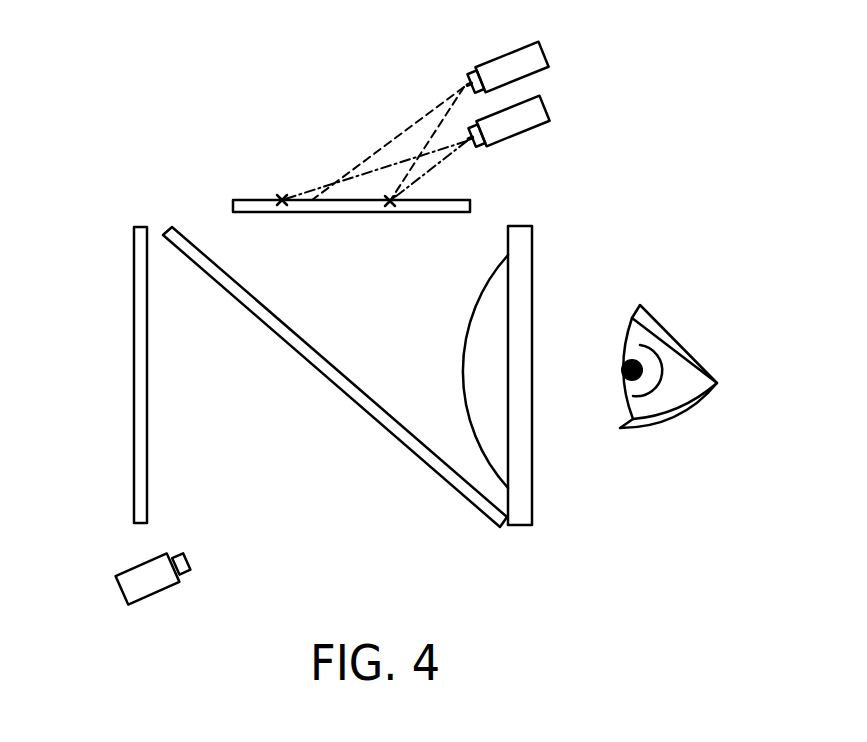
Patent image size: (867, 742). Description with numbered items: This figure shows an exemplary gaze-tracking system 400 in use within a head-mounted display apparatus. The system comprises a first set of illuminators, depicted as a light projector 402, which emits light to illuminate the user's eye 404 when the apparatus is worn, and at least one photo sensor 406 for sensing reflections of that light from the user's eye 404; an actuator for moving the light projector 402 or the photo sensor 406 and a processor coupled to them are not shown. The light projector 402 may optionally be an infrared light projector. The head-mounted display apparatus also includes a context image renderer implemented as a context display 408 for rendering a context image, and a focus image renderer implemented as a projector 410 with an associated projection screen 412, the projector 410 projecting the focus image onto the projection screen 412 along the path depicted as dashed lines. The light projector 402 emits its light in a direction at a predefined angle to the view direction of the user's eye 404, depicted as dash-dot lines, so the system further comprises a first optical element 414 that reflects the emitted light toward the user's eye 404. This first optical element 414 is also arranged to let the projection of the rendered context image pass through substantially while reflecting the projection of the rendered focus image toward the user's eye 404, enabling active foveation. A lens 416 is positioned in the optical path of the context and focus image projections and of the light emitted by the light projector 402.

The gaze-tracking system 400 is at (679, 55).
The light projector 402 is at (549, 107).
The user's eye 404 is at (670, 342).
The photo sensor 406 is at (130, 572).
The context display 408 is at (133, 367).
The projector 410 is at (497, 60).
The projection screen 412 is at (233, 205).
The first optical element 414 is at (470, 503).
The lens 416 is at (532, 258).